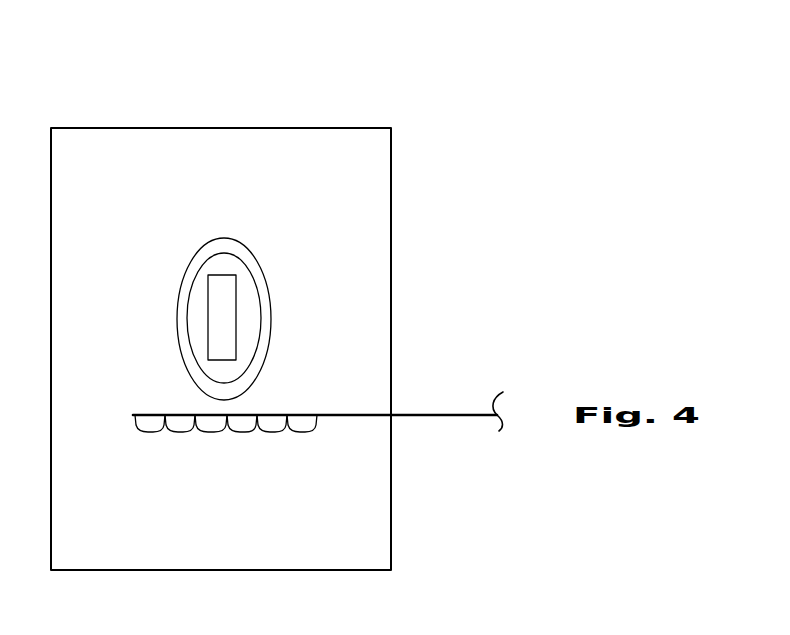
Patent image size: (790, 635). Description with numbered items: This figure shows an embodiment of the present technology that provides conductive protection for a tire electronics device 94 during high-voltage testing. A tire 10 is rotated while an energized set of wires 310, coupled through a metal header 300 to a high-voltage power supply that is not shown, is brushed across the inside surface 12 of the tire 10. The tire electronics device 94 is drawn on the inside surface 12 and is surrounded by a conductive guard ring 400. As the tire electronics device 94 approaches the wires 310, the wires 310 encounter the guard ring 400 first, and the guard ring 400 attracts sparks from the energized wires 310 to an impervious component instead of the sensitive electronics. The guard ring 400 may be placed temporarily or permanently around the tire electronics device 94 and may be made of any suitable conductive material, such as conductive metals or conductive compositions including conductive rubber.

The tire 10 is at (392, 155).
The inside surface 12 is at (133, 158).
The tire electronics device 94 is at (236, 296).
The conductive guard ring 400 is at (268, 349).
The metal header 300 is at (413, 415).
The wires 310 is at (310, 432).